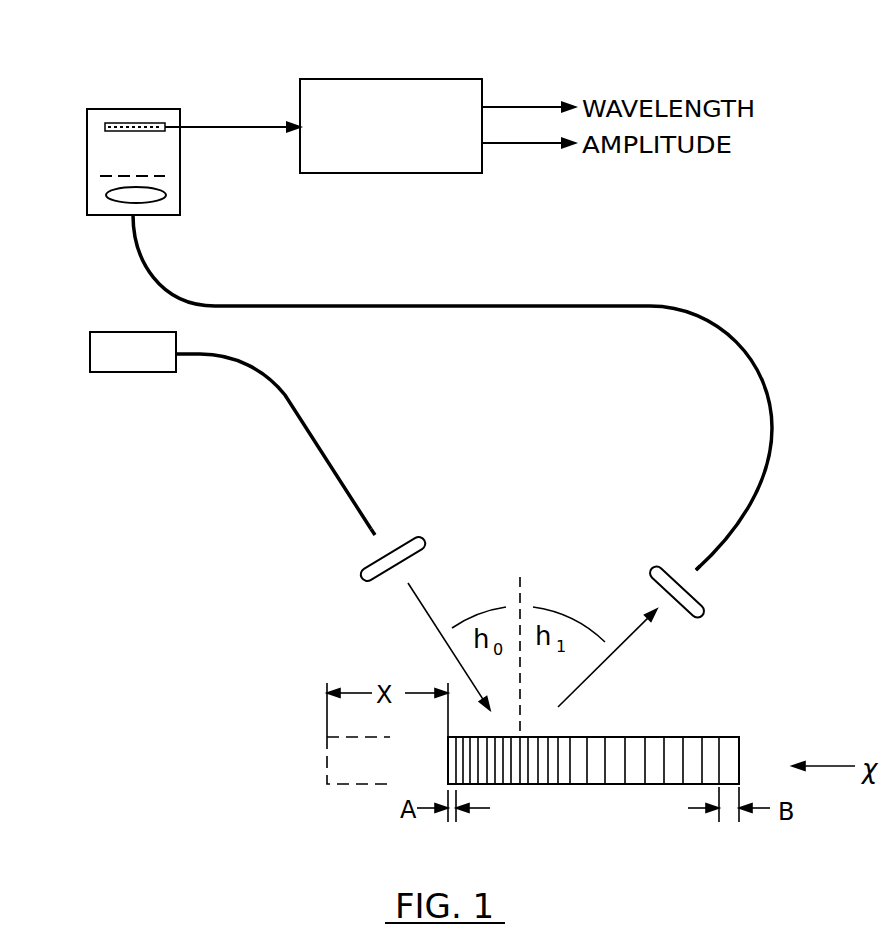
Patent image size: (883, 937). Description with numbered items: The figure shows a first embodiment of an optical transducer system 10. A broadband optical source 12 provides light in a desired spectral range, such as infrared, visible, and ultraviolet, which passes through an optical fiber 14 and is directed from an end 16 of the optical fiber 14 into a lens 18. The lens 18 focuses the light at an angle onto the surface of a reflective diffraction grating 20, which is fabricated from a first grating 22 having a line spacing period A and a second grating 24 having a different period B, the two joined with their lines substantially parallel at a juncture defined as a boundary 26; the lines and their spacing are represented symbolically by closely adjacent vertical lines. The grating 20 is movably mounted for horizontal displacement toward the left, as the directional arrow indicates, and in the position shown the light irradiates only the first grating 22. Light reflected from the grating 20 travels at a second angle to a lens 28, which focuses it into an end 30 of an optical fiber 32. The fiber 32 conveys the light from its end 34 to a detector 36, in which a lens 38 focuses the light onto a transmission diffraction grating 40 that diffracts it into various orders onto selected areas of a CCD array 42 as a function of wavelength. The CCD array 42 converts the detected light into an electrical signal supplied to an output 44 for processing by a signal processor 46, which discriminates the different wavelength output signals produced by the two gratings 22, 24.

The optical transducer system 10 is at (804, 124).
The broadband optical source 12 is at (90, 346).
The optical fiber 14 is at (287, 396).
The end of the optical fiber 16 is at (370, 541).
The lens 18 is at (365, 581).
The reflective diffraction grating 20 is at (619, 763).
The first grating 22 is at (500, 740).
The second grating 24 is at (637, 785).
The boundary 26 is at (571, 797).
The lens 28 is at (648, 569).
The end of the optical fiber 30 is at (693, 569).
The optical fiber 32 is at (772, 472).
The end of the optical fiber 34 is at (130, 217).
The detector 36 is at (86, 146).
The lens 38 is at (152, 202).
The transmission diffraction grating 40 is at (165, 176).
The CCD array 42 is at (135, 123).
The output 44 is at (237, 127).
The signal processor 46 is at (382, 79).